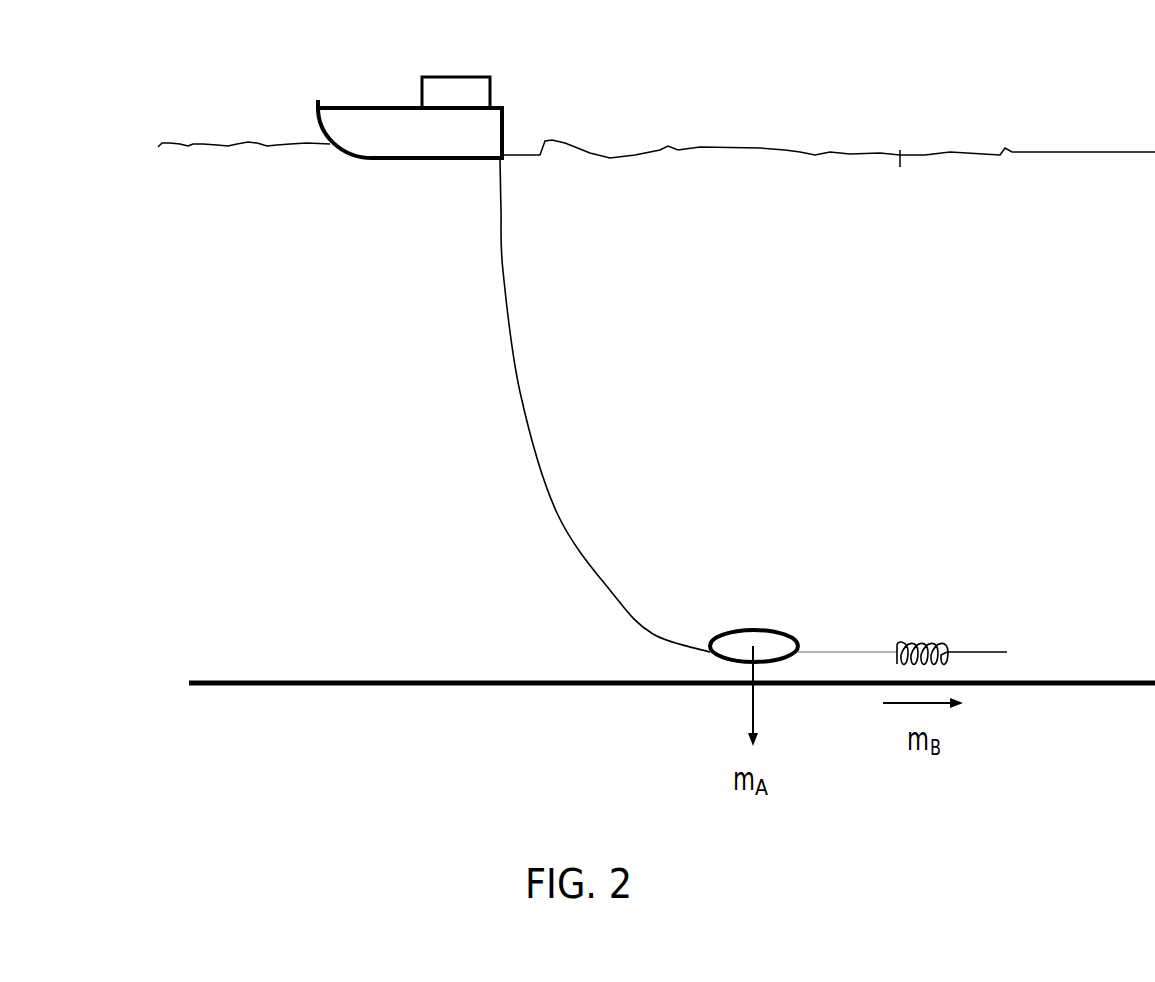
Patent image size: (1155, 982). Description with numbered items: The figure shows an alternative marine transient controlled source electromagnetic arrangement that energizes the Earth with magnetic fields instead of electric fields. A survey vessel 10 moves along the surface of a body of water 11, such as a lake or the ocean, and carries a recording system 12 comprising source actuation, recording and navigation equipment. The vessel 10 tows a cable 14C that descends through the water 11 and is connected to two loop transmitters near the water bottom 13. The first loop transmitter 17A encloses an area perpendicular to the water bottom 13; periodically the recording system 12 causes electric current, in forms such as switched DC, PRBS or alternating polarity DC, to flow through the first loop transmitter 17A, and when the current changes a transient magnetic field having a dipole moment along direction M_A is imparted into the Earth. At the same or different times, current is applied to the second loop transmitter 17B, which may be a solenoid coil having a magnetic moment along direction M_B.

The survey vessel 10 is at (362, 118).
The body of water 11 is at (785, 150).
The recording system 12 is at (465, 83).
The water bottom 13 is at (997, 683).
The cable 14C is at (520, 396).
The first loop transmitter 17A is at (750, 630).
The second loop transmitter 17B is at (938, 602).